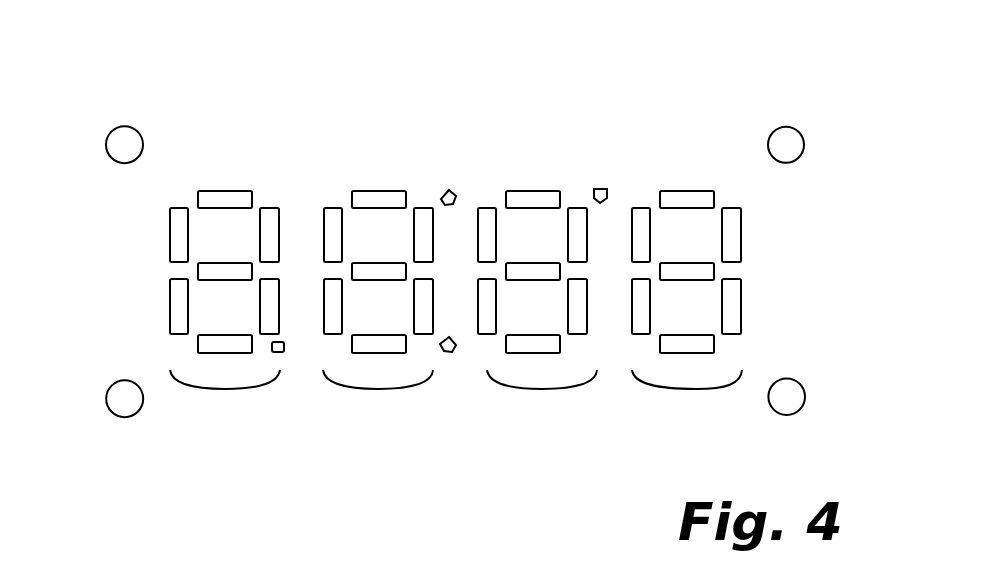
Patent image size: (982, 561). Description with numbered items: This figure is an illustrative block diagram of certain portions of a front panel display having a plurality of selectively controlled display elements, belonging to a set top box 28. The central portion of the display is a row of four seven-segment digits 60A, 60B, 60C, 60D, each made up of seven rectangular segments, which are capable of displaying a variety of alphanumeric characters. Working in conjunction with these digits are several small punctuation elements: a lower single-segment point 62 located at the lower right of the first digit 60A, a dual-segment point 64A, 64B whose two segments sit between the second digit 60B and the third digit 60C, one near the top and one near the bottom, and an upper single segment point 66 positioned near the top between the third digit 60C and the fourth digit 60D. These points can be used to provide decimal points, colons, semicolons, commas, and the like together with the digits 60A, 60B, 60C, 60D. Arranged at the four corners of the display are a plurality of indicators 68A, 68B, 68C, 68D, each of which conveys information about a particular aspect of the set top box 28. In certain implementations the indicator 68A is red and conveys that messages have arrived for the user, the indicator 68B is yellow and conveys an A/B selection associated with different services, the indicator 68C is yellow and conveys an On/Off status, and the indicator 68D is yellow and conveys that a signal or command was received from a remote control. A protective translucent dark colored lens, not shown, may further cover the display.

The set top box 28 is at (597, 68).
The seven-segment digit 60A is at (226, 389).
The seven-segment digit 60B is at (379, 389).
The seven-segment digit 60C is at (542, 389).
The seven-segment digit 60D is at (696, 389).
The lower single-segment point 62 is at (284, 343).
The dual-segment point 64A is at (451, 190).
The dual-segment point 64B is at (447, 337).
The upper single segment point 66 is at (600, 189).
The indicator 68A is at (123, 137).
The indicator 68B is at (785, 135).
The indicator 68C is at (123, 390).
The indicator 68D is at (795, 390).